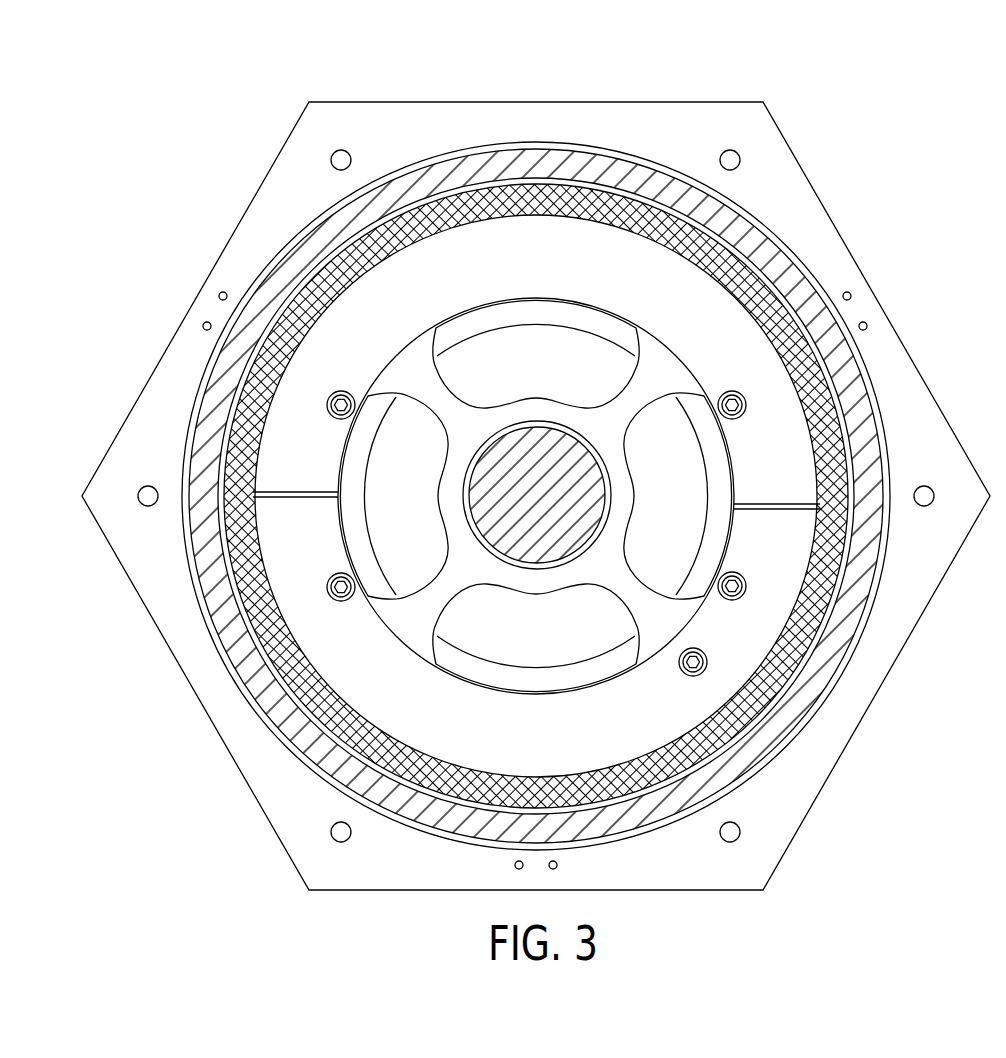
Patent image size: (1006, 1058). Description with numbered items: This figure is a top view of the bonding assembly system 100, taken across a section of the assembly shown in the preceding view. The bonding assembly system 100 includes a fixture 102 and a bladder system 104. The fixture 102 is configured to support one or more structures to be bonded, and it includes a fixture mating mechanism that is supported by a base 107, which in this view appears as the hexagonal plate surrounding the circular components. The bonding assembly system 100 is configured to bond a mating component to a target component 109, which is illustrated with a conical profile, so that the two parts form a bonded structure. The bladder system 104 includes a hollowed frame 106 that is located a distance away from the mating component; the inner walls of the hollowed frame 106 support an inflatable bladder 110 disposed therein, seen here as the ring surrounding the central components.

The bonding assembly system 100 is at (155, 193).
The fixture 102 is at (290, 852).
The bladder system 104 is at (532, 247).
The hollowed frame 106 is at (798, 427).
The base 107 is at (128, 456).
The target component 109 is at (212, 358).
The inflatable bladder 110 is at (283, 675).